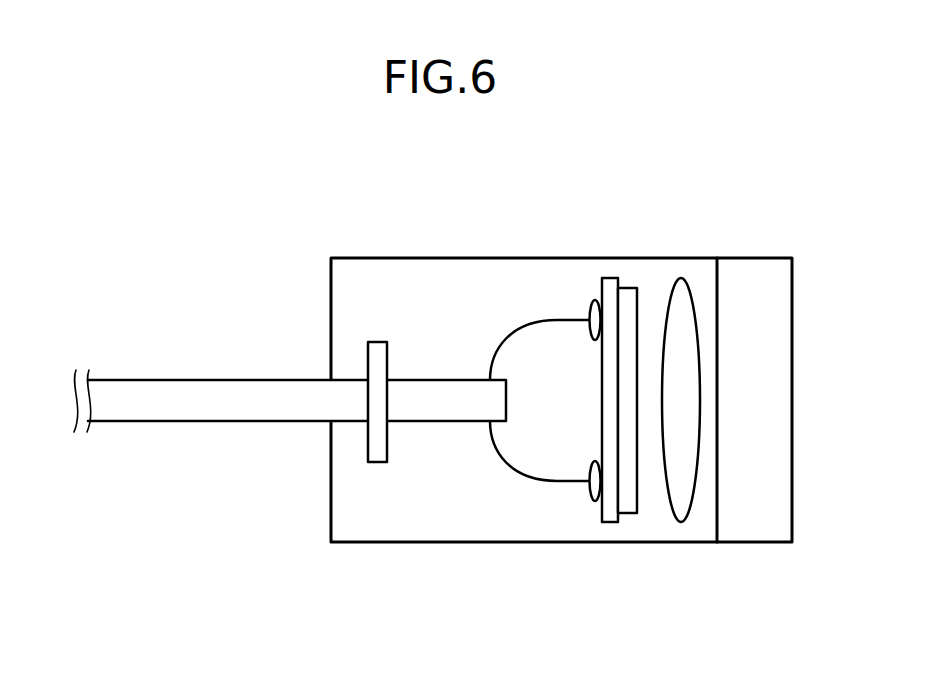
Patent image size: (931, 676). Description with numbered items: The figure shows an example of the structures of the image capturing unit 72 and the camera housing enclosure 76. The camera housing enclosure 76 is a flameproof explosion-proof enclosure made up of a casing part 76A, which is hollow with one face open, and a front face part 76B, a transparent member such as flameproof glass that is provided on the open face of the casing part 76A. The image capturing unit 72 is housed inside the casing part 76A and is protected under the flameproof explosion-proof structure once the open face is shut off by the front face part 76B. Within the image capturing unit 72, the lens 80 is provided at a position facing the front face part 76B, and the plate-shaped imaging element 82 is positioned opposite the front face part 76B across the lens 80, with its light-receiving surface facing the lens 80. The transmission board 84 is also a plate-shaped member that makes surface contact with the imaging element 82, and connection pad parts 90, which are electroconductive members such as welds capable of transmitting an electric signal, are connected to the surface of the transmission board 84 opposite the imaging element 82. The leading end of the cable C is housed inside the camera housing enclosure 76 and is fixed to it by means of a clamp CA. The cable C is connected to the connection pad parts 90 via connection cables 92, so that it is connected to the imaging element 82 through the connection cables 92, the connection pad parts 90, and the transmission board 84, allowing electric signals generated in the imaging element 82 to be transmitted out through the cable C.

The image capturing unit 72 is at (598, 180).
The camera housing enclosure 76 is at (564, 450).
The casing part 76A is at (698, 527).
The front face part 76B is at (754, 430).
The lens 80 is at (684, 277).
The imaging element 82 is at (625, 288).
The transmission board 84 is at (608, 278).
The connection pad parts 90 is at (591, 302).
The connection cables 92 is at (520, 322).
The cable C is at (445, 380).
The clamp CA is at (375, 340).